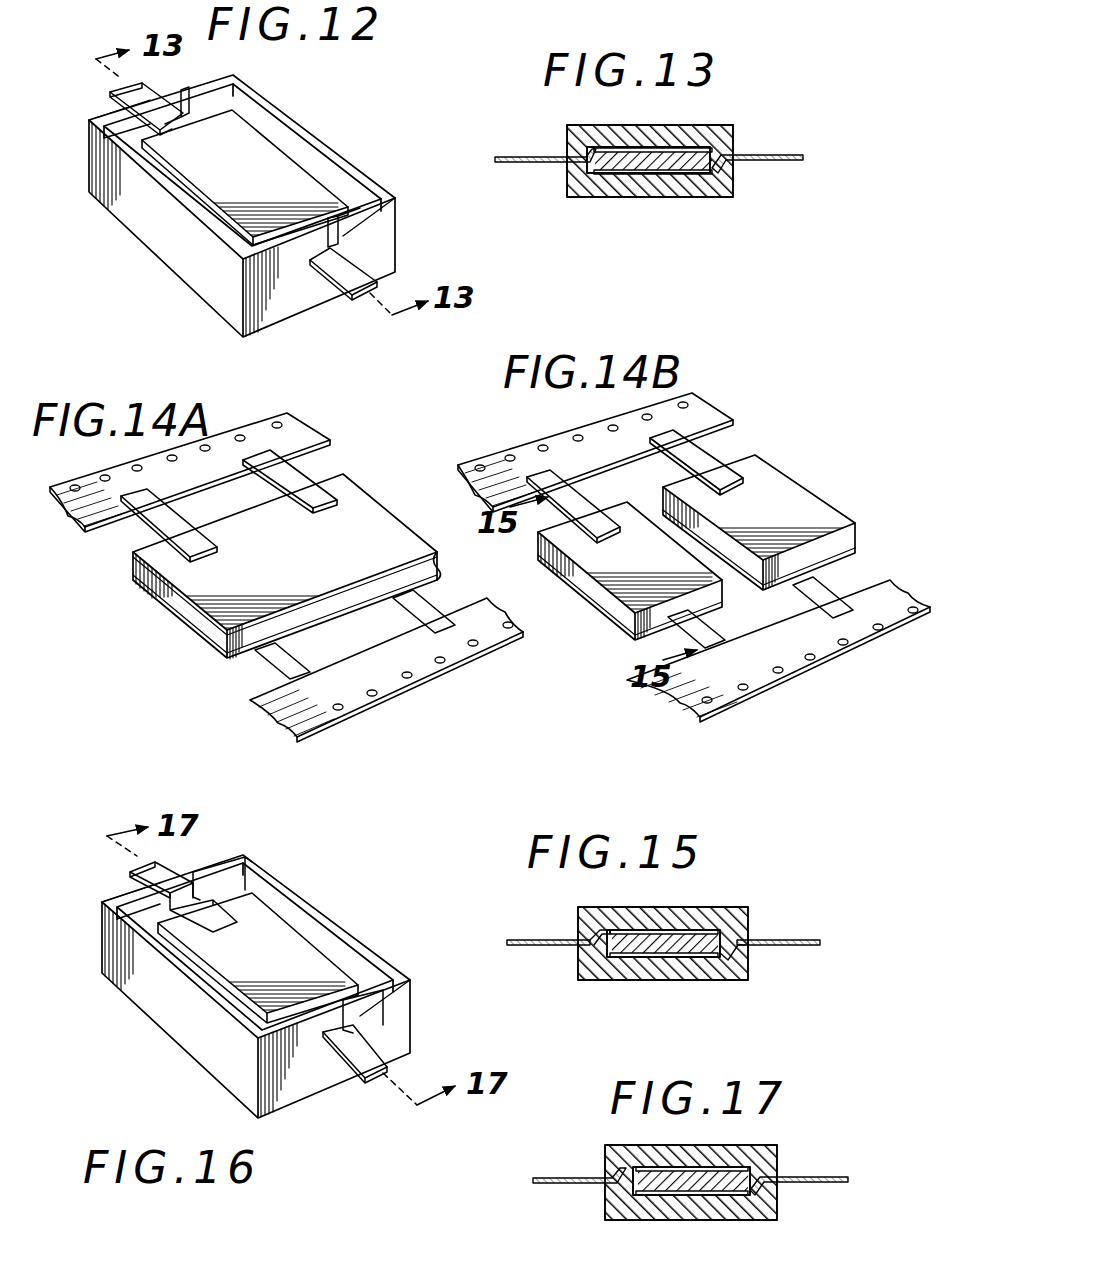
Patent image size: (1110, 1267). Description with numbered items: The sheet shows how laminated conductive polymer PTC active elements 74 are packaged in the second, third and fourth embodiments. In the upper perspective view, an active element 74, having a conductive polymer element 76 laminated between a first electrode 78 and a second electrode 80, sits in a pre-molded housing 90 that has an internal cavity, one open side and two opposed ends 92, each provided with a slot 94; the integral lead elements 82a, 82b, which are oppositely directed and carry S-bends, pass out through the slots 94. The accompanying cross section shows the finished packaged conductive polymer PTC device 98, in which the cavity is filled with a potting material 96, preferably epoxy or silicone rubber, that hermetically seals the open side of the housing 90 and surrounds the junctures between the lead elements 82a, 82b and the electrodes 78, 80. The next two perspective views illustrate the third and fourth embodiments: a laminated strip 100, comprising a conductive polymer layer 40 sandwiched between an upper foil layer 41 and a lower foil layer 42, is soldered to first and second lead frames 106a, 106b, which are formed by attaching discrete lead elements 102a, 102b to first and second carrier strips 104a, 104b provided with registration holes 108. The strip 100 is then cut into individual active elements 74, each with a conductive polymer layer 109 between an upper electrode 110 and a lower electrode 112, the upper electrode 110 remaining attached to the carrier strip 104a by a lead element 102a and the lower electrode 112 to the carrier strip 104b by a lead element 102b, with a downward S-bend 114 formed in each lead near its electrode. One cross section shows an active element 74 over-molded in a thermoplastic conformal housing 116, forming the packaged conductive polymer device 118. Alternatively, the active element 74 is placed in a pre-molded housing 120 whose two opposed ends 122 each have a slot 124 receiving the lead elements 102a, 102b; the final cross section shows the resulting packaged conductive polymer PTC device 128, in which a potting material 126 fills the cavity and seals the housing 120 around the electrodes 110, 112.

In FIG. 14A, the conductive polymer layer 40 is at (207, 627).
In FIG. 14A, the upper foil layer 41 is at (147, 592).
In FIG. 14A, the lower foil layer 42 is at (173, 613).
In FIG. 12, the active element 74 is at (272, 168).
In FIG. 14B, the active element 74 is at (803, 478).
In FIG. 16, the active element 74 is at (290, 947).
In FIG. 13, the conductive polymer element 76 is at (648, 172).
In FIG. 13, the first electrode 78 is at (655, 148).
In FIG. 13, the second electrode 80 is at (597, 176).
In FIG. 12, the first lead element 82a is at (125, 96).
In FIG. 13, the first lead element 82a is at (512, 158).
In FIG. 12, the second lead element 82b is at (362, 298).
In FIG. 13, the second lead element 82b is at (800, 163).
In FIG. 12, the pre-molded housing 90 is at (355, 168).
In FIG. 13, the pre-molded housing 90 is at (705, 194).
In FIG. 12, the housing end 92 is at (89, 128).
In FIG. 12, the slot 94 is at (180, 92).
In FIG. 13, the potting material 96 is at (714, 128).
In FIG. 13, the packaged conductive polymer PTC device 98 is at (556, 121).
In FIG. 14A, the laminated strip 100 is at (343, 545).
In FIG. 14A, the first lead element 102a is at (268, 480).
In FIG. 14B, the first lead element 102a is at (672, 462).
In FIG. 15, the first lead element 102a is at (522, 940).
In FIG. 16, the first lead element 102a is at (167, 874).
In FIG. 17, the first lead element 102a is at (547, 1166).
In FIG. 14A, the second lead element 102b is at (303, 646).
In FIG. 14B, the second lead element 102b is at (705, 632).
In FIG. 15, the second lead element 102b is at (807, 940).
In FIG. 16, the second lead element 102b is at (345, 1073).
In FIG. 17, the second lead element 102b is at (828, 1183).
In FIG. 14A, the first carrier strip 104a is at (255, 432).
In FIG. 14B, the first carrier strip 104a is at (582, 428).
In FIG. 14A, the second carrier strip 104b is at (355, 705).
In FIG. 14B, the second carrier strip 104b is at (827, 652).
In FIG. 14A, the first lead frame 106a is at (306, 409).
In FIG. 14A, the second lead frame 106b is at (247, 716).
In FIG. 14A, the registration holes 108 is at (133, 468).
In FIG. 14B, the registration holes 108 is at (540, 447).
In FIG. 14B, the conductive polymer layer 109 is at (850, 540).
In FIG. 15, the conductive polymer layer 109 is at (670, 931).
In FIG. 17, the conductive polymer layer 109 is at (643, 1183).
In FIG. 14B, the upper electrode 110 is at (788, 524).
In FIG. 15, the upper electrode 110 is at (700, 938).
In FIG. 17, the upper electrode 110 is at (687, 1167).
In FIG. 14B, the lower electrode 112 is at (600, 615).
In FIG. 15, the lower electrode 112 is at (627, 958).
In FIG. 17, the lower electrode 112 is at (705, 1195).
In FIG. 15, the S-bend 114 is at (593, 937).
In FIG. 15, the over-molded conformal housing 116 is at (633, 912).
In FIG. 15, the packaged conductive polymer device 118 is at (755, 905).
In FIG. 16, the pre-molded housing 120 is at (337, 942).
In FIG. 17, the pre-molded housing 120 is at (667, 1221).
In FIG. 16, the housing end 122 is at (107, 900).
In FIG. 16, the slot 124 is at (243, 870).
In FIG. 17, the potting material 126 is at (741, 1148).
In FIG. 17, the packaged conductive polymer PTC device 128 is at (784, 1226).